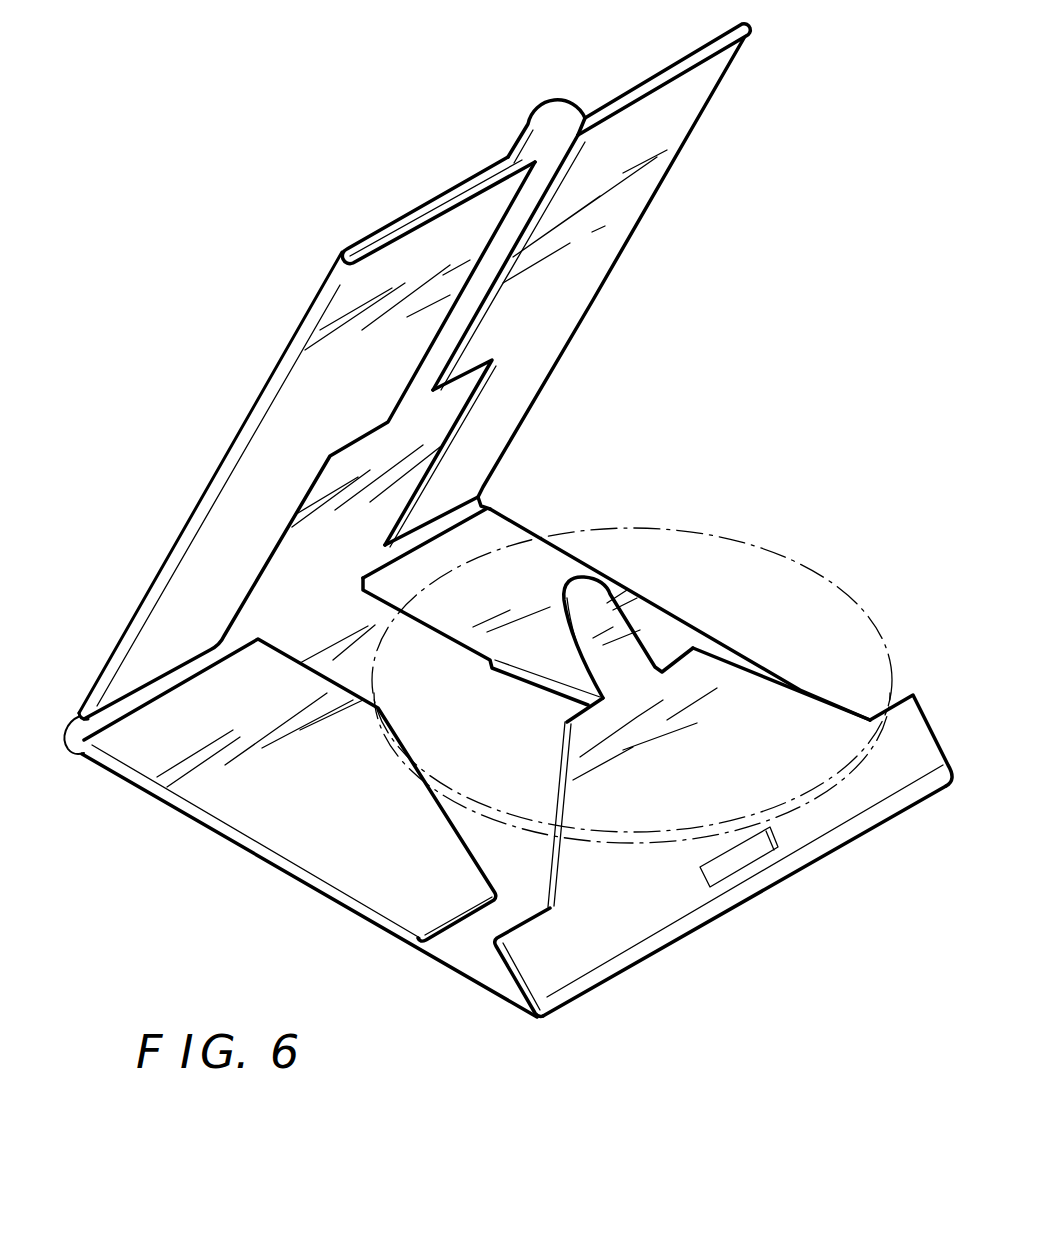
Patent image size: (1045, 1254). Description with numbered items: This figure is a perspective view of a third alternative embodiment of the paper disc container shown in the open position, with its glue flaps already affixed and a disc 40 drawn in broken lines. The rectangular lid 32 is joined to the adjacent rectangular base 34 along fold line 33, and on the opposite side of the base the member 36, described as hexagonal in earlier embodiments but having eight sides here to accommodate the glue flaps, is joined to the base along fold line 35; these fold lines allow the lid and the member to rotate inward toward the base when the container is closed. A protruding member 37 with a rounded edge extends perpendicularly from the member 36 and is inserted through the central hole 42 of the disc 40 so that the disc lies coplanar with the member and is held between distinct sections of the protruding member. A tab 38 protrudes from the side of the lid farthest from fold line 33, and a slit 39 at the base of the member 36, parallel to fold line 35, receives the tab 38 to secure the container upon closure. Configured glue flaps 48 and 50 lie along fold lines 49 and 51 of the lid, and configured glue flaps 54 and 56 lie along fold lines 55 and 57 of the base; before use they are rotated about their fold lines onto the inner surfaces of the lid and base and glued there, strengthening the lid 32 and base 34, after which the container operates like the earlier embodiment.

The lid 32 is at (417, 427).
The fold line 33 is at (73, 752).
The base 34 is at (483, 947).
The fold line 35 is at (653, 957).
The hexagonal member 36 is at (593, 872).
The protruding member 37 is at (607, 603).
The tab 38 is at (558, 118).
The slit 39 is at (737, 858).
The disc 40 is at (808, 563).
The central hole 42 is at (660, 665).
The glue flap 48 is at (413, 262).
The fold line 49 is at (268, 380).
The glue flap 50 is at (703, 122).
The fold line 51 is at (645, 218).
The glue flap 54 is at (232, 795).
The fold line 55 is at (318, 893).
The glue flap 56 is at (503, 548).
The fold line 57 is at (513, 538).